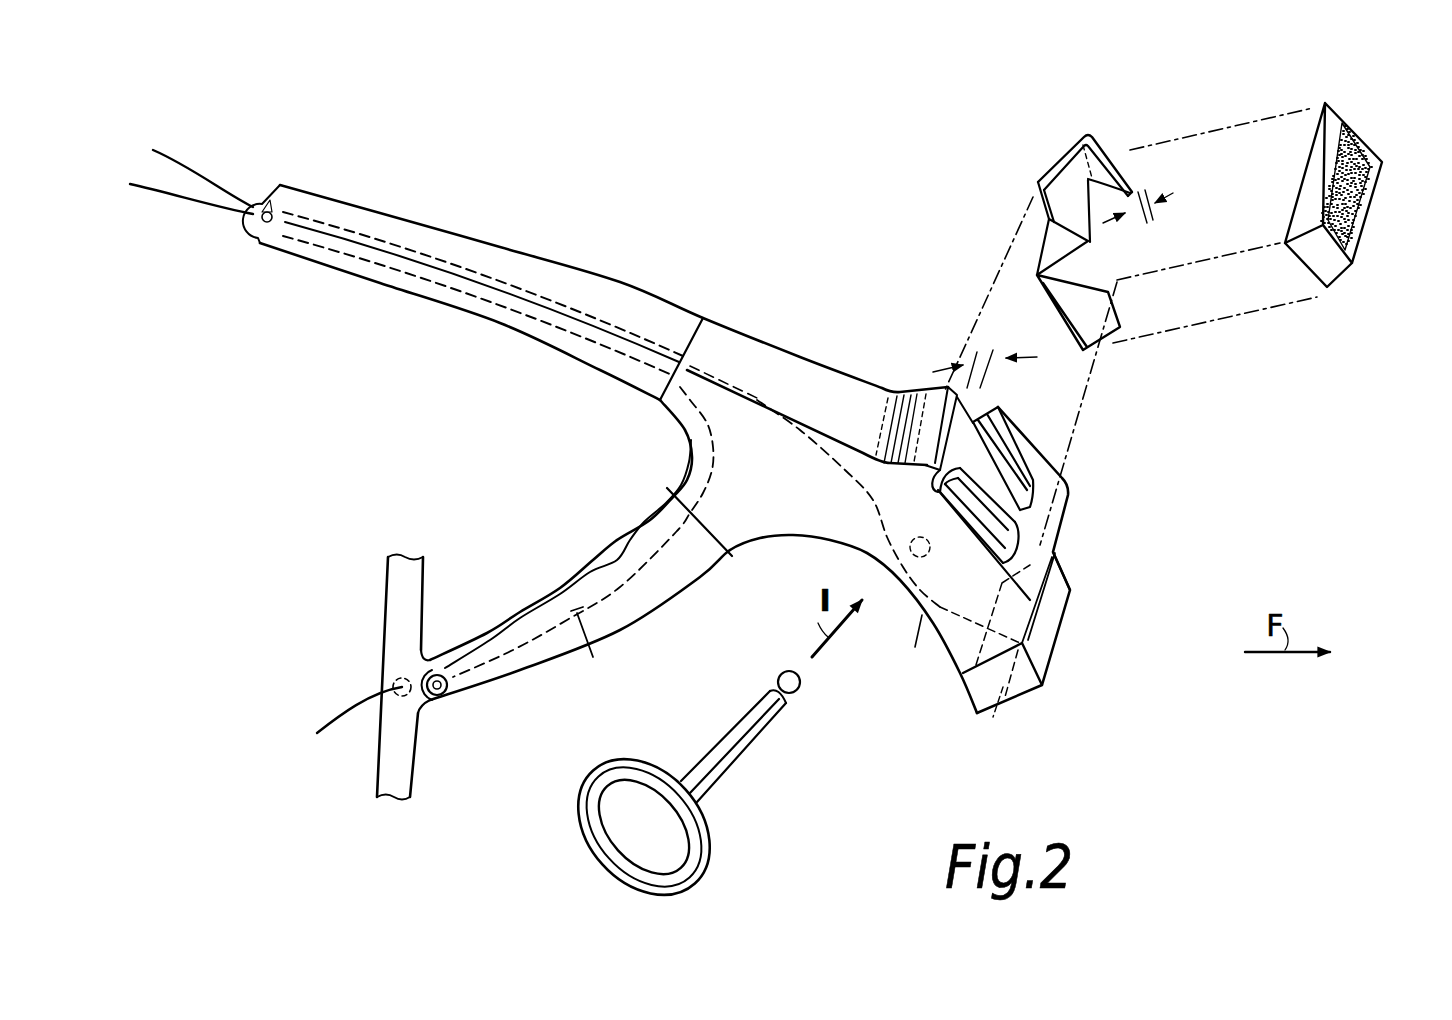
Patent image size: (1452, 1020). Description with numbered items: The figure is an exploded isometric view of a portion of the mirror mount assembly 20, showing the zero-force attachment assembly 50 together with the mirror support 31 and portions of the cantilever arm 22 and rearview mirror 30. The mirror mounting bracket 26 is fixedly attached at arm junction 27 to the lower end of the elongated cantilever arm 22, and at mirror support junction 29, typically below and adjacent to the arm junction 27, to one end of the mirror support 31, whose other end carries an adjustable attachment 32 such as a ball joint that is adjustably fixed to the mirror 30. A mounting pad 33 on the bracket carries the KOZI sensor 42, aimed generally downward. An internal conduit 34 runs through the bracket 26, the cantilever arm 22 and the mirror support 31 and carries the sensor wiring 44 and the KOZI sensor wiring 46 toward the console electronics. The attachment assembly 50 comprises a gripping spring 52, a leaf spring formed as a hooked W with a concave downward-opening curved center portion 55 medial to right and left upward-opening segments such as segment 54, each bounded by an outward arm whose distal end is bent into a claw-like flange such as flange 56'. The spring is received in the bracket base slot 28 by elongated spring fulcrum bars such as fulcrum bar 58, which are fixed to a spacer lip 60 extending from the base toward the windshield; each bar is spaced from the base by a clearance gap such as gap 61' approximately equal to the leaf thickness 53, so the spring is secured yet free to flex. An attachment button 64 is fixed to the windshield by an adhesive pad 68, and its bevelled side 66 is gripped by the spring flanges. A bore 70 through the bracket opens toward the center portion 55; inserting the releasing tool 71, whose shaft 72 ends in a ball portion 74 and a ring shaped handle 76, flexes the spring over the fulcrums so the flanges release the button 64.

The mirror mount assembly 20 is at (672, 258).
The cantilever arm 22 is at (553, 262).
The mirror mounting bracket 26 is at (845, 523).
The arm junction 27 is at (705, 318).
The bracket base slot 28 is at (941, 563).
The mirror support junction 29 is at (667, 490).
The rearview mirror 30 is at (388, 607).
The mirror support 31 is at (600, 556).
The adjustable attachment 32 is at (440, 657).
The mounting pad 33 is at (1030, 623).
The internal conduit 34 is at (270, 210).
The KOZI sensor 42 is at (1025, 688).
The AOS/KOZI sensor wiring 44 is at (215, 207).
The KOZI sensor wiring 46 is at (257, 204).
The zero-force attachment assembly 50 is at (1150, 620).
The gripping spring 52 is at (1040, 233).
The leaf thickness 53 is at (1147, 223).
The concave upward-opening segment 54 is at (1036, 277).
The curved center portion 55 is at (1097, 243).
The claw-like flange 56' is at (1117, 114).
The spring fulcrum bar 58 is at (1062, 530).
The spacer lip 60 is at (1055, 556).
The clearance gap 61' is at (986, 350).
The attachment button 64 is at (1385, 126).
The bevelled side 66 is at (1333, 265).
The adhesive pad 68 is at (1350, 210).
The bore 70 is at (932, 485).
The releasing tool 71 is at (585, 885).
The shaft 72 is at (742, 758).
The ball portion 74 is at (798, 693).
The ring shaped handle 76 is at (713, 843).